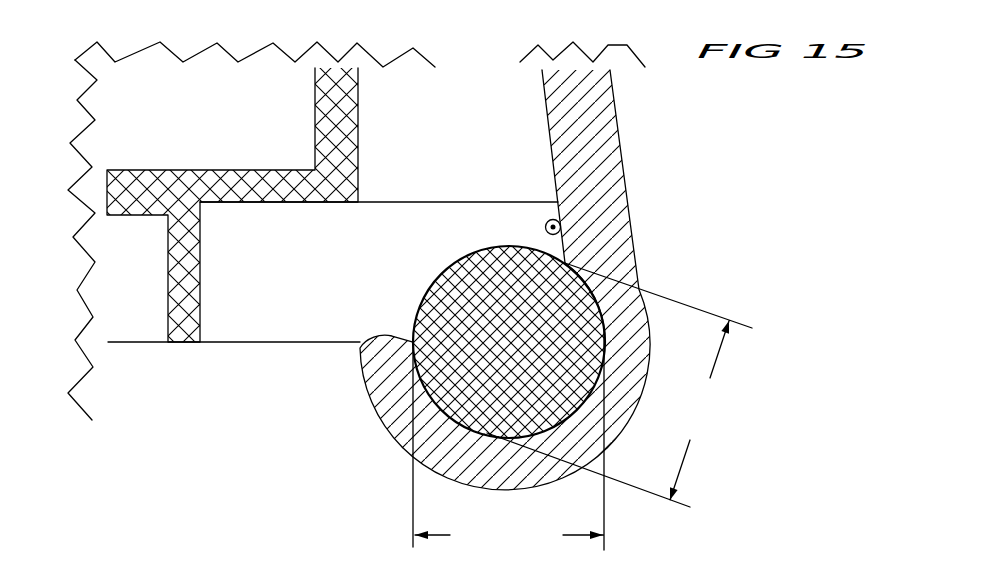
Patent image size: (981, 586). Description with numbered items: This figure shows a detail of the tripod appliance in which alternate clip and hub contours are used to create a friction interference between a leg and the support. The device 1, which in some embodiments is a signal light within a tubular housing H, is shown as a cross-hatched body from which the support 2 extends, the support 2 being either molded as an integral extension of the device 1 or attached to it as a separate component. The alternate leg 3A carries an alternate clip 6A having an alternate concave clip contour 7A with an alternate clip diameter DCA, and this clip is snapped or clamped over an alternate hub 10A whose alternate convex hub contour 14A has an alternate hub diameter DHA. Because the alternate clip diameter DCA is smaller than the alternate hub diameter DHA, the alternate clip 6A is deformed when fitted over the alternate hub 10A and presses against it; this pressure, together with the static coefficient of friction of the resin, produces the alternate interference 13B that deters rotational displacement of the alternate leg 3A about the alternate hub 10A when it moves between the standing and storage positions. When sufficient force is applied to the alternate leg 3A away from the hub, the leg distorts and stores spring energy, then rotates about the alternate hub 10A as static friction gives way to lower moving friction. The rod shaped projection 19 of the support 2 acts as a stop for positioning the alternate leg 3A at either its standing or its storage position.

The device 1 is at (349, 137).
The tubular housing H is at (266, 205).
The support 2 is at (272, 305).
The projection 19 is at (552, 219).
The alternate convex hub contour 14A is at (435, 278).
The alternate leg 3A is at (609, 215).
The alternate hub 10A is at (555, 302).
The alternate concave clip contour 7A is at (437, 410).
The alternate interference 13B is at (453, 472).
The alternate clip 6A is at (390, 402).
The alternate clip diameter DCA is at (508, 440).
The alternate hub diameter DHA is at (619, 385).